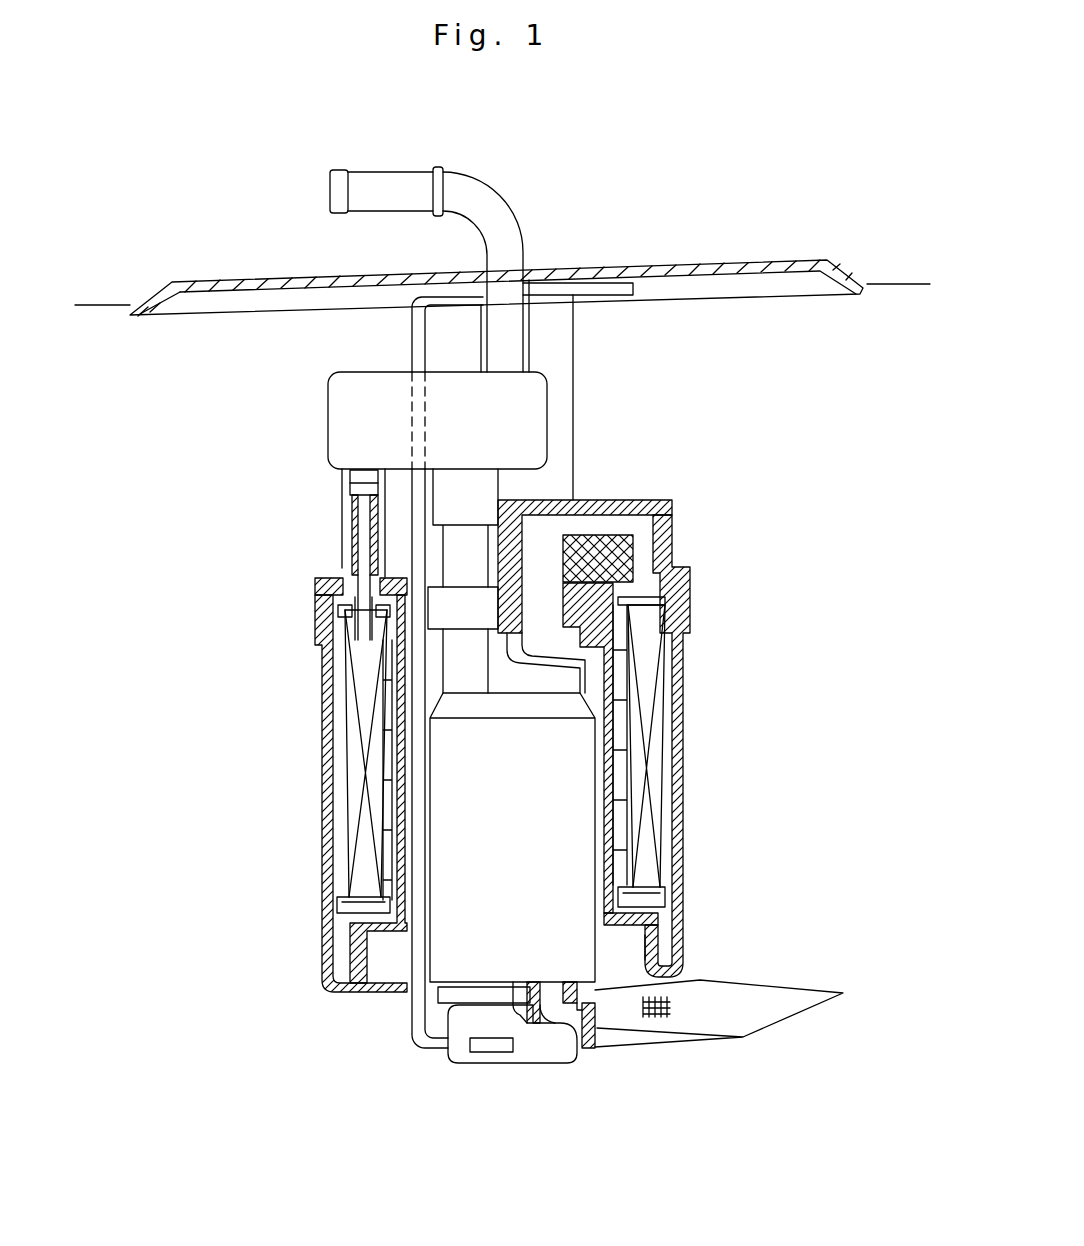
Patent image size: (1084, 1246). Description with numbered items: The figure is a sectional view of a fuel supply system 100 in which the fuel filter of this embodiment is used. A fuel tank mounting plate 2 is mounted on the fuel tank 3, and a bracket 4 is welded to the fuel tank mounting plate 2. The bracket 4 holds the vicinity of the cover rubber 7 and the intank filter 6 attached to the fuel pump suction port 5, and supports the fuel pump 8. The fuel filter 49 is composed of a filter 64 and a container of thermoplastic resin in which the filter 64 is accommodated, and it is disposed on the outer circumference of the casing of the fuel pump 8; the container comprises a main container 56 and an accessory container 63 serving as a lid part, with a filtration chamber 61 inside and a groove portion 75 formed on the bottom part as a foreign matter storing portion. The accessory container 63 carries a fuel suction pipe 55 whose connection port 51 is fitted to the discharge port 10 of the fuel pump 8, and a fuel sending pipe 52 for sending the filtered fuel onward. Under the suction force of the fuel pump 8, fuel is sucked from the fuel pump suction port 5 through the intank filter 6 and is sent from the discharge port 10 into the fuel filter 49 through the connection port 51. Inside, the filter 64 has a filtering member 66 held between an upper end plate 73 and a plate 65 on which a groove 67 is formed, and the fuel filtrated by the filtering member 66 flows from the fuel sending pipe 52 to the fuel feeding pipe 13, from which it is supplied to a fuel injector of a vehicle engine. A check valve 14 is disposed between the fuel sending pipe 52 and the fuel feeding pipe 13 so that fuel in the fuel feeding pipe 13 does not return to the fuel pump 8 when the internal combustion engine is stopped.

The fuel supply system 100 is at (562, 172).
The fuel tank mounting plate 2 is at (618, 266).
The fuel tank 3 is at (871, 282).
The bracket 4 is at (412, 334).
The fuel pump suction port 5 is at (563, 1003).
The intank filter 6 is at (750, 997).
The cover rubber 7 is at (518, 1047).
The fuel pump 8 is at (555, 905).
The discharge port 10 is at (627, 590).
The fuel feeding pipe 13 is at (461, 196).
The check valve 14 is at (338, 415).
The fuel filter 49 is at (697, 703).
The connection port 51 is at (545, 573).
The fuel sending pipe 52 is at (360, 533).
The fuel suction pipe 55 is at (595, 527).
The main container 56 is at (328, 840).
The filtration chamber 61 is at (340, 692).
The accessory container 63 is at (337, 579).
The filter 64 is at (658, 812).
The plate 65 is at (627, 733).
The filtering member 66 is at (355, 775).
The groove 67 is at (628, 777).
The upper end plate 73 is at (545, 612).
The groove portion 75 is at (663, 937).